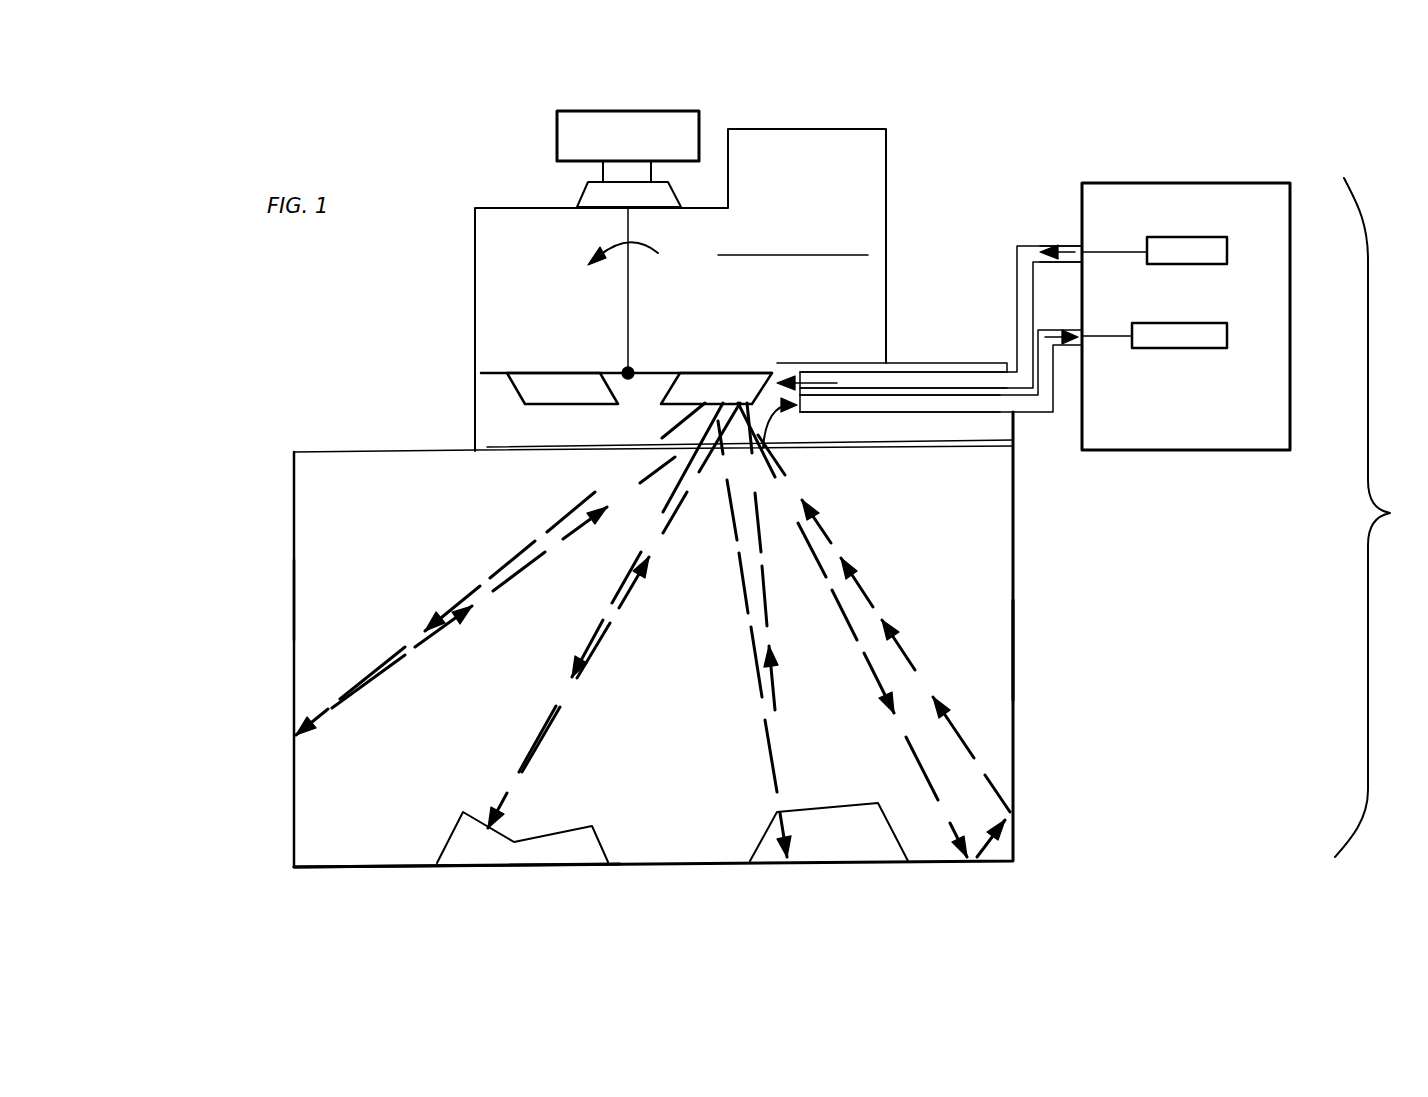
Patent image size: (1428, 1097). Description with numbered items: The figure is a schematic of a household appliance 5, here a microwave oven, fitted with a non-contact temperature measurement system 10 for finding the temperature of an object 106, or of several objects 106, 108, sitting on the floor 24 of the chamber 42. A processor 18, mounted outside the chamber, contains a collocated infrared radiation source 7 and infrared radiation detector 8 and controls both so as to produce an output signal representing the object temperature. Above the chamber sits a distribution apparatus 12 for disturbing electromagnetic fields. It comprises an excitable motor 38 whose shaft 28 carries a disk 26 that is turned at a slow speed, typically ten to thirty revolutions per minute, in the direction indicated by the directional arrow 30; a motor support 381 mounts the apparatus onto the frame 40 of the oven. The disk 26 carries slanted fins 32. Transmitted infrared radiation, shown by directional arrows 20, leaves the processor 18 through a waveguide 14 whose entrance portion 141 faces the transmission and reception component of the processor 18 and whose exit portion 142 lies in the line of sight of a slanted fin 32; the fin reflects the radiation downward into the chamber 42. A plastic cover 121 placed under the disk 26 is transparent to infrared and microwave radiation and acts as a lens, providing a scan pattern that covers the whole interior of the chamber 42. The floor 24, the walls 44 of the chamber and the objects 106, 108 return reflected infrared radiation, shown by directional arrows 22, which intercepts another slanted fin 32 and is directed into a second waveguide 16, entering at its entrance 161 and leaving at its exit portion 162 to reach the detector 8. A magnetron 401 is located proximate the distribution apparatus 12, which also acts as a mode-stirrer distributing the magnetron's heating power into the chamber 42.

The household appliance 5 is at (1023, 127).
The non-contact temperature measurement system 10 is at (1381, 517).
The distribution apparatus 12 is at (524, 136).
The excitable motor 38 is at (583, 111).
The motor support 381 is at (578, 200).
The magnetron 401 is at (862, 228).
The directional arrows 30 is at (658, 253).
The shaft 28 is at (628, 327).
The disk 26 is at (495, 373).
The slanted fin 32 is at (552, 373).
The waveguide 14 is at (1017, 303).
The entrance portion 141 is at (1035, 247).
The exit portion 142 is at (866, 420).
The waveguide 16 is at (1035, 412).
The second waveguide inlet 161 is at (866, 420).
The exit portion 162 is at (1067, 328).
The processor 18 is at (1243, 182).
The infrared radiation source 7 is at (1228, 258).
The infrared radiation detector 8 is at (1227, 340).
The frame 40 is at (407, 451).
The plastic cover 121 is at (495, 452).
The chamber 42 is at (403, 553).
The chamber side walls 44 is at (294, 605).
The floor 24 is at (343, 867).
The object 106 is at (600, 843).
The object 108 is at (900, 838).
The directional arrows 20 is at (1060, 250).
The directional arrows 22 is at (1055, 346).